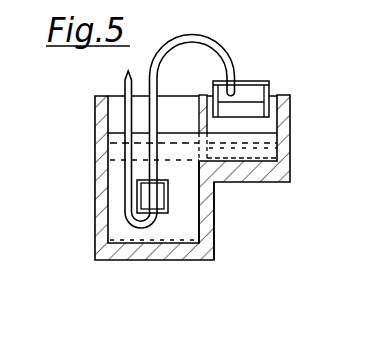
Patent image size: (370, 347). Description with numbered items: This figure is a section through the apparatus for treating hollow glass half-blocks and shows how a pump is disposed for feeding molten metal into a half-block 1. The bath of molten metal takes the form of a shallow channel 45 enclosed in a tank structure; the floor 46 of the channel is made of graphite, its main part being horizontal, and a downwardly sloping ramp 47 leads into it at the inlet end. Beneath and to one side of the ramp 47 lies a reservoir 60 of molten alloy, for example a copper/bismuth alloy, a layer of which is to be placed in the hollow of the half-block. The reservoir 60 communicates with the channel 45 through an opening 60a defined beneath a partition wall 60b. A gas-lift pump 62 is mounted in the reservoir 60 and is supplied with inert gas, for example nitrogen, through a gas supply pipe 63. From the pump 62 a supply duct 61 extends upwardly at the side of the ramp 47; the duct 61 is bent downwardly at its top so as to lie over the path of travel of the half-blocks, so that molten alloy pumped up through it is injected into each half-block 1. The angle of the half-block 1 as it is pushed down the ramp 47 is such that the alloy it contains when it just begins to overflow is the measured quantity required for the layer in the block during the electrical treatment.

The half-block 1 is at (270, 86).
The channel 45 is at (255, 150).
The floor 46 is at (260, 160).
The ramp 47 is at (266, 127).
The reservoir 60 is at (168, 227).
The opening 60a is at (232, 185).
The partition wall 60b is at (198, 112).
The supply duct 61 is at (190, 35).
The gas-lift pump 62 is at (169, 194).
The gas supply pipe 63 is at (125, 120).